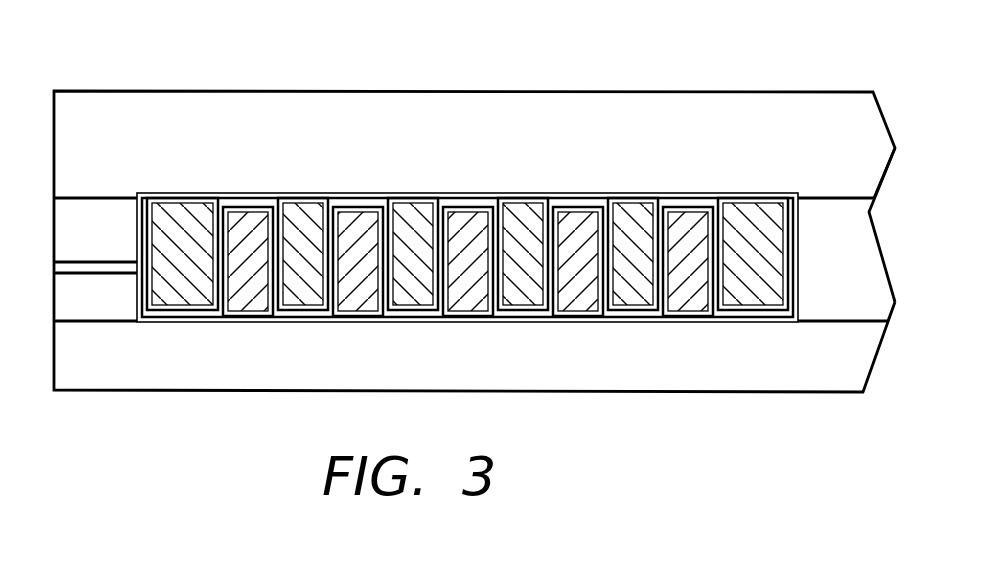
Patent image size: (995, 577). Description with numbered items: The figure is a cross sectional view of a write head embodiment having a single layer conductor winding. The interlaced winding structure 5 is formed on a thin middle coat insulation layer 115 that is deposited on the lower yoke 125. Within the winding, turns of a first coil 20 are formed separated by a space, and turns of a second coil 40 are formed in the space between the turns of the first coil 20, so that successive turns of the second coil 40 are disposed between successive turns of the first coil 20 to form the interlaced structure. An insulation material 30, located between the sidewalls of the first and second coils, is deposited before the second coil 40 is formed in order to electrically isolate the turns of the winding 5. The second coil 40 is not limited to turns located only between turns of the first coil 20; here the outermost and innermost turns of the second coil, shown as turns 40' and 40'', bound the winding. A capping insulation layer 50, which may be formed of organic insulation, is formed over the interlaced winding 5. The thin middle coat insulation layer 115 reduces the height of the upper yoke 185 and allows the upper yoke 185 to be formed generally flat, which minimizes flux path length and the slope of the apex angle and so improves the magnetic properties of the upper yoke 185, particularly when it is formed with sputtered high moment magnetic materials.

The interlaced winding structure 5 is at (357, 166).
The first coil 20 is at (682, 213).
The insulation material 30 is at (612, 222).
The second coil 40 is at (527, 220).
The outermost turn of second coil 40' is at (182, 332).
The innermost turn of second coil 40'' is at (753, 333).
The capping insulation layer 50 is at (745, 199).
The thin middle coat insulation layer 115 is at (628, 319).
The lower yoke 125 is at (122, 358).
The upper yoke 185 is at (121, 127).